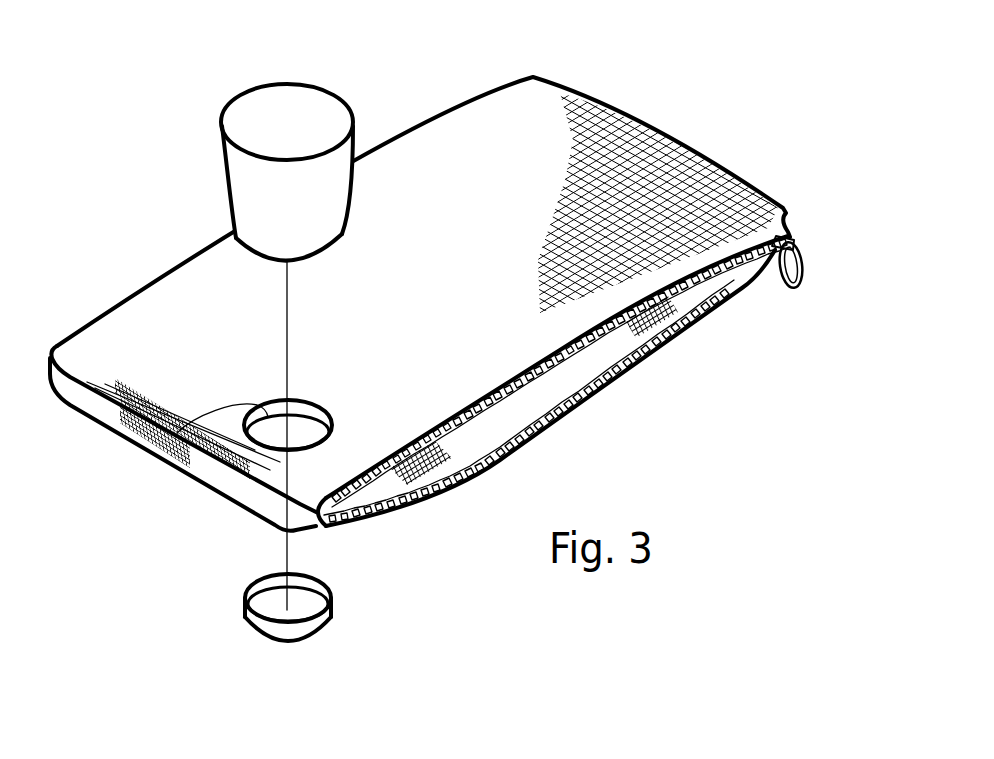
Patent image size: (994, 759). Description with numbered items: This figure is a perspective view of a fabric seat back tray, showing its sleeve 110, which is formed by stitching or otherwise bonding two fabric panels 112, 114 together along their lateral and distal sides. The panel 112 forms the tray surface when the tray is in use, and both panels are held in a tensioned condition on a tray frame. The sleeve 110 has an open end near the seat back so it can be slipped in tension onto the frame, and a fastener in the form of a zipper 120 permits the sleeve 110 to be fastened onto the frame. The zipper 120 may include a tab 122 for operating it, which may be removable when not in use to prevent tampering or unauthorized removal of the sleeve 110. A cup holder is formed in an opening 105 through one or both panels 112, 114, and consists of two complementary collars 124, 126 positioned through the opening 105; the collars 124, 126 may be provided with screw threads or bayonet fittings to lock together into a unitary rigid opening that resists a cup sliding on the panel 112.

The opening 105 is at (163, 447).
The sleeve 110 is at (410, 128).
The fabric panel 112 is at (496, 128).
The fabric panel 114 is at (716, 290).
The zipper 120 is at (557, 413).
The tab 122 is at (803, 268).
The collar 124 is at (303, 107).
The collar 126 is at (323, 625).